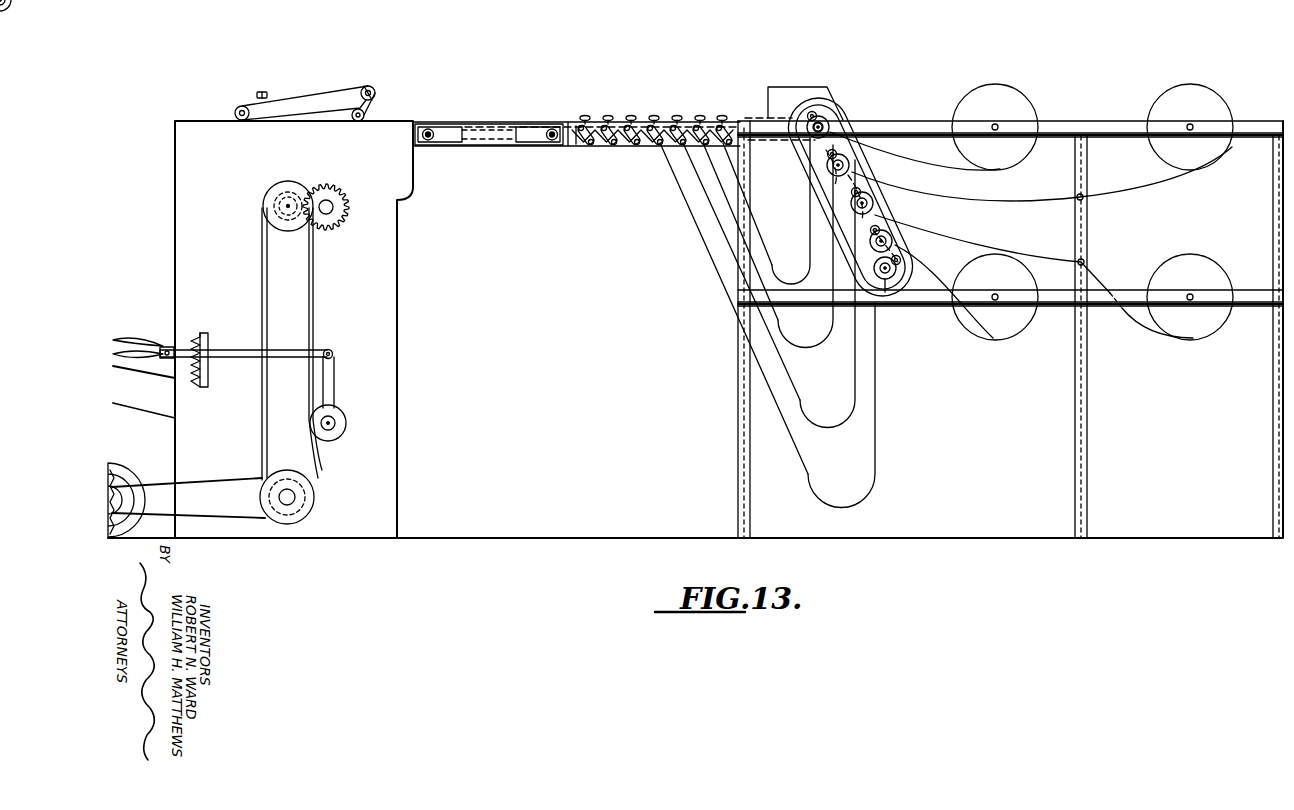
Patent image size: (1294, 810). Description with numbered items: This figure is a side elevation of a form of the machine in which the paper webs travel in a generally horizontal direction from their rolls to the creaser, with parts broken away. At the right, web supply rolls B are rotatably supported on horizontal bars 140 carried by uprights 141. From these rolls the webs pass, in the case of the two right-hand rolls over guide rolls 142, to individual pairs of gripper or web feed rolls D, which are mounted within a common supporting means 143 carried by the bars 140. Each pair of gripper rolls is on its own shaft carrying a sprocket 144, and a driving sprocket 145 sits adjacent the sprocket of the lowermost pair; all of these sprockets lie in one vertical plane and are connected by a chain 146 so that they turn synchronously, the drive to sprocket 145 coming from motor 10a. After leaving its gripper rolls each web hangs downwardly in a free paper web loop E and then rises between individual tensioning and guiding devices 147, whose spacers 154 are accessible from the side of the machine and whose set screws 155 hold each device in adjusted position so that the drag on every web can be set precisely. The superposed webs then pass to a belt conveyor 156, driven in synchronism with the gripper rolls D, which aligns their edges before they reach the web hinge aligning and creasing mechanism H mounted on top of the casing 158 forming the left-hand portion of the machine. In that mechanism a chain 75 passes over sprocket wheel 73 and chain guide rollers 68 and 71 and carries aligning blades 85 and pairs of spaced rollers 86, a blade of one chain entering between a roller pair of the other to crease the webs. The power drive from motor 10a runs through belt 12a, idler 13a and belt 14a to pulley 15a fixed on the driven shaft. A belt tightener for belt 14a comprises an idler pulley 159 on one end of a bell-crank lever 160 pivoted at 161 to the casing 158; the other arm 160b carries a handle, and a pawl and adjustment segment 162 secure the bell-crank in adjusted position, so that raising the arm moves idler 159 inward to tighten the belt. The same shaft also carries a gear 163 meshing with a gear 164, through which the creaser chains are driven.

The motor 10a is at (120, 483).
The belt 12a is at (200, 481).
The idler 13a is at (315, 497).
The belt 14a is at (314, 290).
The pulley 15a is at (270, 199).
The chain guide roller 68 is at (352, 114).
The chain guide roller 71 is at (375, 90).
The sprocket wheel 73 is at (233, 110).
The chain 75 is at (305, 96).
The aligning blade 85 is at (335, 90).
The spaced rollers 86 is at (251, 86).
The web hinge aligning and creasing mechanism H is at (386, 100).
The horizontal bar 140 is at (1098, 130).
The upright 141 is at (738, 443).
The guide roll 142 is at (1077, 200).
The common supporting means 143 is at (795, 97).
The sprocket 144 is at (813, 131).
The driving sprocket 145 is at (892, 300).
The chain 146 is at (840, 194).
The tensioning and guiding device 147 is at (632, 156).
The spacer 154 is at (592, 143).
The set screw 155 is at (587, 117).
The belt conveyor 156 is at (452, 141).
The casing 158 is at (397, 360).
The idler pulley 159 is at (347, 423).
The bell-crank lever 160 is at (337, 372).
The arm of bell-crank 160b is at (227, 358).
The pivot 161 is at (332, 351).
The pawl and adjustment segment 162 is at (192, 336).
The gear 163 is at (268, 212).
The gear 164 is at (345, 210).
The paper web supply roll B is at (1018, 103).
The gripper or web feed roll D is at (828, 118).
The free paper web loop E is at (789, 280).